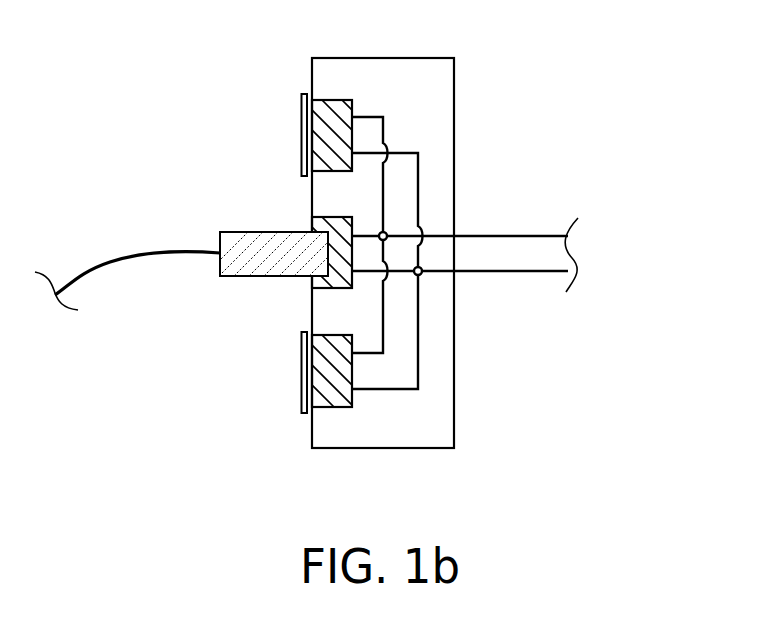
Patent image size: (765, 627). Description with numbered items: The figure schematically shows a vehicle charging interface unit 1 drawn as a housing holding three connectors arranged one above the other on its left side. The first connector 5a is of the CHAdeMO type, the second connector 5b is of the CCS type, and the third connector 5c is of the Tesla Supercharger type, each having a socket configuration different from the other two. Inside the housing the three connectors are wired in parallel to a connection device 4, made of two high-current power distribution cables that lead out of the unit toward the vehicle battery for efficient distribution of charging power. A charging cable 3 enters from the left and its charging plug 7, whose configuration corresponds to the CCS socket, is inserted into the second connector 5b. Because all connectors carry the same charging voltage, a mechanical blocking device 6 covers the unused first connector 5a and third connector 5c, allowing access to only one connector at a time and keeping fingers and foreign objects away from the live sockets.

The vehicle charging interface unit 1 is at (410, 58).
The charging cable 3 is at (107, 257).
The connection device 4 is at (524, 234).
The first connector 5a is at (332, 407).
The second connector 5b is at (335, 217).
The third connector 5c is at (334, 100).
The mechanical blocking device 6 is at (300, 135).
The charging plug 7 is at (218, 245).